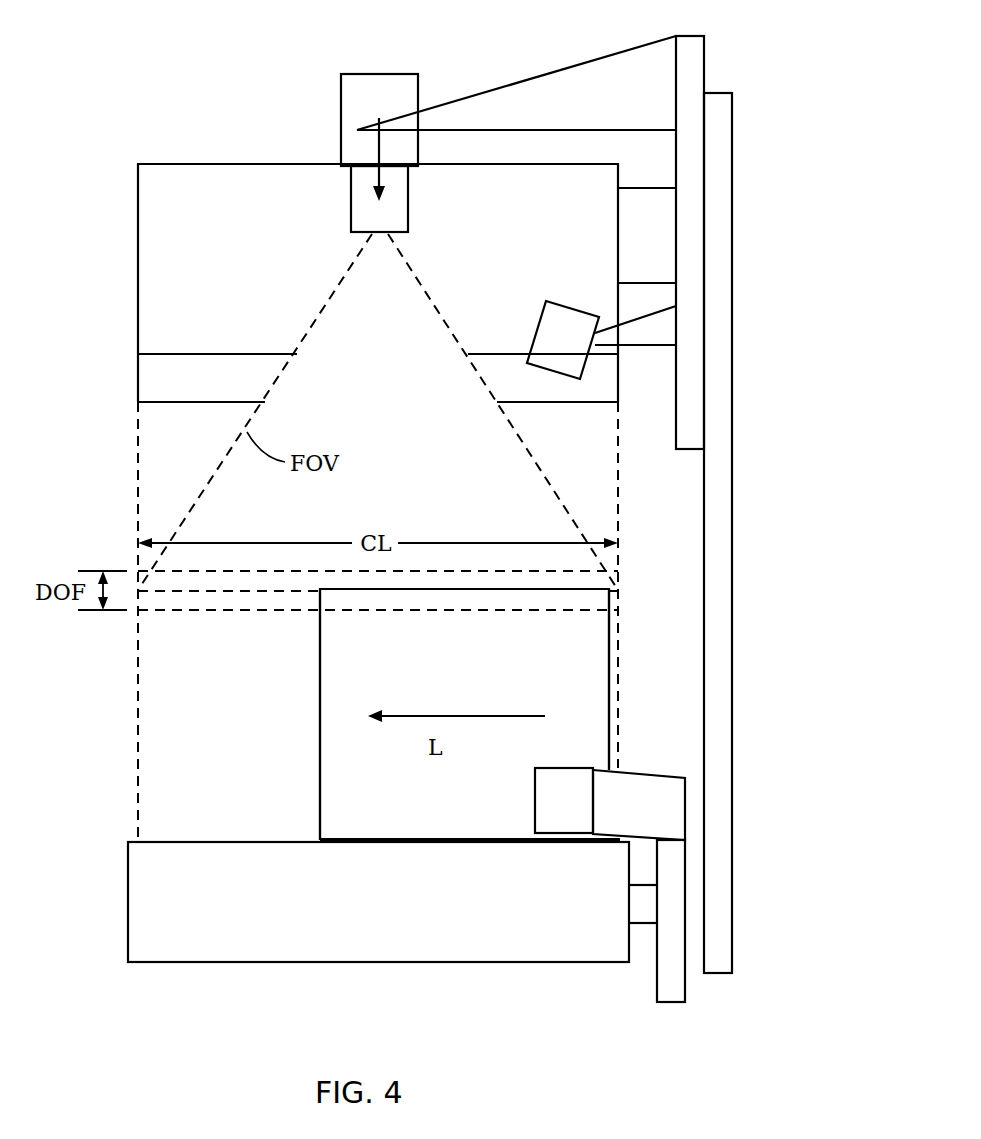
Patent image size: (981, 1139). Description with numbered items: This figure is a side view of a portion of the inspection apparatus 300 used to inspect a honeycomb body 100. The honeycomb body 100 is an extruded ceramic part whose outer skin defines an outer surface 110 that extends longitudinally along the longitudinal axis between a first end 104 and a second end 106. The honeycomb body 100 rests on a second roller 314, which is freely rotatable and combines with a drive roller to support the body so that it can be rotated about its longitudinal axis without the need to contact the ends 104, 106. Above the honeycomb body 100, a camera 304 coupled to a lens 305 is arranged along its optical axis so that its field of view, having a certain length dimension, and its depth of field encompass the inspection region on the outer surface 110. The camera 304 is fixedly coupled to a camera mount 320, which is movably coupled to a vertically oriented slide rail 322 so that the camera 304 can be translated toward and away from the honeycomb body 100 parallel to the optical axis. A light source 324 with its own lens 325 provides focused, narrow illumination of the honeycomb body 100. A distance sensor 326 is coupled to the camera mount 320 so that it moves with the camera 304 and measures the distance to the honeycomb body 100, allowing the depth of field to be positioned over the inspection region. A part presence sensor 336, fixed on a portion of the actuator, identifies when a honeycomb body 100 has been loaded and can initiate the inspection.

The inspection apparatus 300 is at (172, 93).
The camera 304 is at (385, 92).
The lens 305 is at (360, 202).
The camera mount 320 is at (692, 70).
The slide rail 322 is at (718, 468).
The light source 324 is at (152, 242).
The lens 325 is at (152, 383).
The distance sensor 326 is at (567, 325).
The second roller 314 is at (150, 920).
The part presence sensor 336 is at (563, 815).
The honeycomb body 100 is at (243, 655).
The first end 104 is at (310, 712).
The second end 106 is at (620, 652).
The outer surface 110 is at (472, 664).